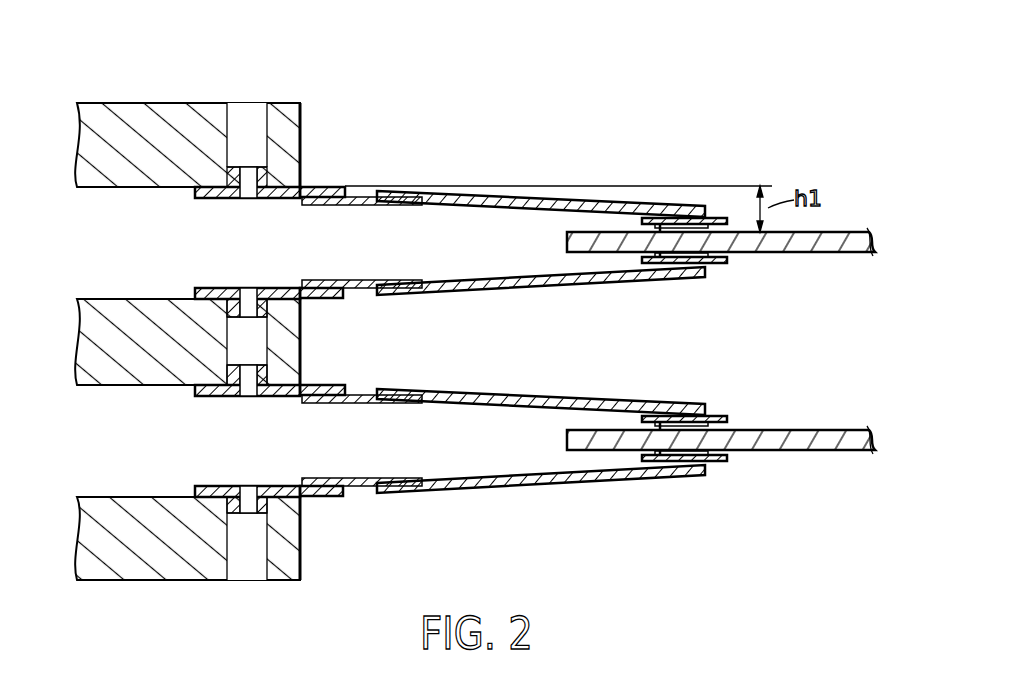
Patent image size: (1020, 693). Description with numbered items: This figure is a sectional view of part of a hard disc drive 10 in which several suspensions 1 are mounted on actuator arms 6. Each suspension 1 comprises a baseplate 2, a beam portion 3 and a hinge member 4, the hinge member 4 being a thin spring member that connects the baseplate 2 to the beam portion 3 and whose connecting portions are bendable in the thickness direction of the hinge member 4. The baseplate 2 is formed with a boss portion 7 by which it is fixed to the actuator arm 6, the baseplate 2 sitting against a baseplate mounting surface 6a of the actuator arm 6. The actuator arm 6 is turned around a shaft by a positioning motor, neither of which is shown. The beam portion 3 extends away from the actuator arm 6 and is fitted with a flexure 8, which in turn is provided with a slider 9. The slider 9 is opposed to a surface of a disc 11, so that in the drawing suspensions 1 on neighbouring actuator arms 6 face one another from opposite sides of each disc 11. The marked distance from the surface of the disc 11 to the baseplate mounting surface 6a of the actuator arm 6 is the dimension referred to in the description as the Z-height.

The suspension 1 is at (534, 332).
The baseplate 2 is at (272, 199).
The beam portion 3 is at (503, 210).
The hinge member 4 is at (357, 207).
The actuator arm 6 is at (120, 103).
The baseplate mounting surface 6a is at (316, 189).
The boss portion 7 is at (220, 178).
The flexure 8 is at (721, 217).
The slider 9 is at (729, 222).
The hard disc drive 10 is at (475, 309).
The disc 11 is at (848, 231).